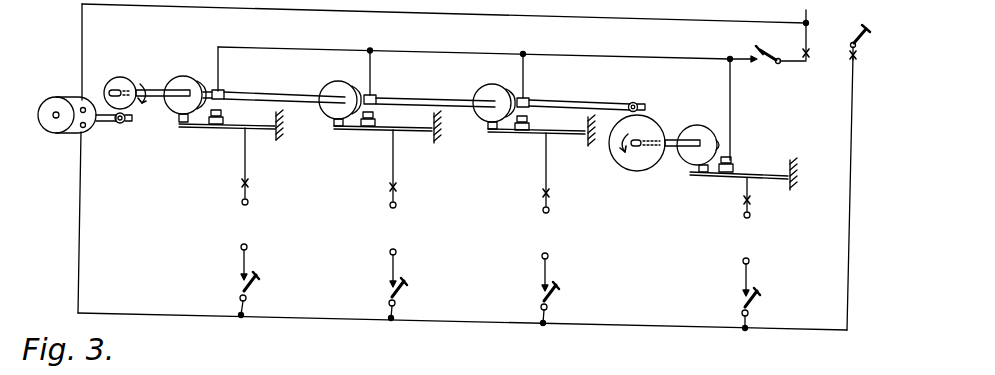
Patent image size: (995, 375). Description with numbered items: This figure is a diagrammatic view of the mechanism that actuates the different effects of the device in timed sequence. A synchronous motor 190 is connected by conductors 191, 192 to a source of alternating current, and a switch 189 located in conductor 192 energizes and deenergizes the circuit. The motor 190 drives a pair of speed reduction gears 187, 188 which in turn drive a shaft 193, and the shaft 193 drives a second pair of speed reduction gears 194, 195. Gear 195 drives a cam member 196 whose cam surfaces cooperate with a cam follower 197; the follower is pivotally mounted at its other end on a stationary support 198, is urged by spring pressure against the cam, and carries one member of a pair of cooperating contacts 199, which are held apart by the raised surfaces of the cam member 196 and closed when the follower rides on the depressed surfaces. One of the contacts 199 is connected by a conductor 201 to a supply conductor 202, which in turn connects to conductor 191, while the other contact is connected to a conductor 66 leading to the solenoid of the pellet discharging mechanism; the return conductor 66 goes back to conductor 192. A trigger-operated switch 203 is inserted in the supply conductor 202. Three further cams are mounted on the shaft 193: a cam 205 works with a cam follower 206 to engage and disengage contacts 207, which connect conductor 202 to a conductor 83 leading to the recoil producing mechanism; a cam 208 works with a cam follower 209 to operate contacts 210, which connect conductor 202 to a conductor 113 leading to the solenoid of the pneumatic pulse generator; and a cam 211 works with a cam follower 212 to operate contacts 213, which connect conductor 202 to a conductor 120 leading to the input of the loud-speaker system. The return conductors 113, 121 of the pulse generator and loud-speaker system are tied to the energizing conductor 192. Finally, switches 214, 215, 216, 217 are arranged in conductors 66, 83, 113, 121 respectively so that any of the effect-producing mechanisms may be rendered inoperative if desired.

The conductor 66 is at (749, 212).
The conductor 83 is at (548, 178).
The conductor 113 is at (404, 168).
The conductor 120 is at (245, 171).
The conductor 121 is at (247, 252).
The speed reduction gear 187 is at (118, 130).
The speed reduction gear 188 is at (122, 77).
The switch 189 is at (851, 42).
The synchronous motor 190 is at (72, 100).
The conductor 191 is at (668, 4).
The conductor 192 is at (858, 24).
The shaft 193 is at (580, 93).
The speed reduction gear 194 is at (642, 92).
The speed reduction gear 195 is at (642, 172).
The cam member 196 is at (701, 120).
The cam follower 197 is at (703, 180).
The stationary support 198 is at (790, 177).
The contacts 199 is at (735, 163).
The conductor 201 is at (730, 122).
The conductor 202 is at (745, 58).
The switch 203 is at (767, 64).
The cam 205 is at (482, 86).
The cam follower 206 is at (507, 135).
The contacts 207 is at (530, 130).
The cam 208 is at (332, 86).
The cam follower 209 is at (345, 131).
The contacts 210 is at (376, 127).
The cam 211 is at (184, 76).
The cam follower 212 is at (192, 130).
The contacts 213 is at (214, 127).
The switch 214 is at (744, 296).
The switch 215 is at (543, 302).
The switch 216 is at (391, 297).
The switch 217 is at (240, 288).